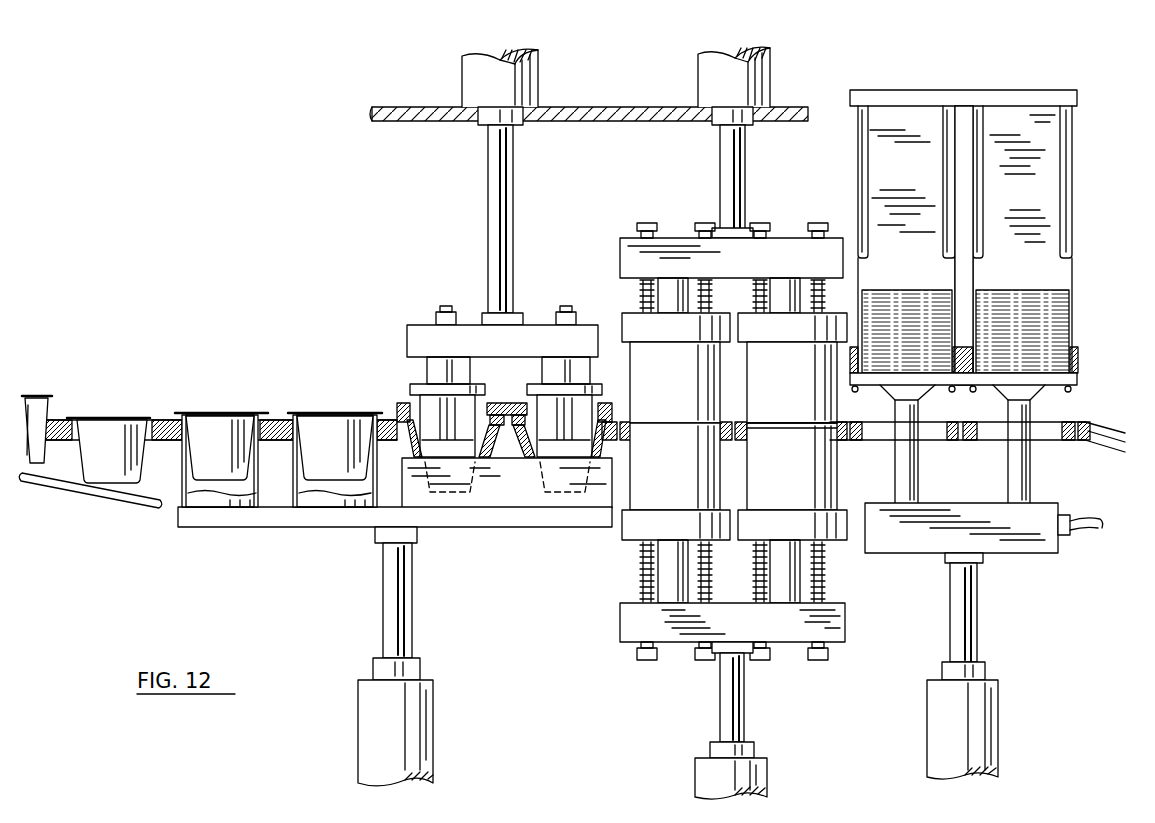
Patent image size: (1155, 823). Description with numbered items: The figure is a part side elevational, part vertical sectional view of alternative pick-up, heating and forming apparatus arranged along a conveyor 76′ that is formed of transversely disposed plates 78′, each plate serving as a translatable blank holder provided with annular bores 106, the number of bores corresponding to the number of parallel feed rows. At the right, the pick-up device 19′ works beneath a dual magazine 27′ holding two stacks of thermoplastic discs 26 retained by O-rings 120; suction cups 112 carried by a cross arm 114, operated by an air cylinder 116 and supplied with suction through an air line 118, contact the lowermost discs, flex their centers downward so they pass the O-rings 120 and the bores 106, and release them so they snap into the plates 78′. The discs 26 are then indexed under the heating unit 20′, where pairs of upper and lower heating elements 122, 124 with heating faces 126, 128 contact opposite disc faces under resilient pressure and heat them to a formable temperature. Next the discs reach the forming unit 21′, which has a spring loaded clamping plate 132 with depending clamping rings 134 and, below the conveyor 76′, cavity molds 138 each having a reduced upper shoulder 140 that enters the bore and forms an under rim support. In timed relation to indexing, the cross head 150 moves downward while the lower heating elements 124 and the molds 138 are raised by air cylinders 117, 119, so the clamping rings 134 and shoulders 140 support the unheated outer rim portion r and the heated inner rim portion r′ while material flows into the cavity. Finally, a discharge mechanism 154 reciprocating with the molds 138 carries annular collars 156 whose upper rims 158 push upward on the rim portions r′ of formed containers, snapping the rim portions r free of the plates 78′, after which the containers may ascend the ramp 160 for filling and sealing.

The cross head 150 is at (633, 122).
The forming unit 21′ is at (531, 291).
The heating unit 20′ is at (752, 218).
The magazine 27′ is at (1066, 190).
The discs 26 is at (897, 297).
The clamping plate 132 is at (404, 380).
The clamping rings 134 is at (399, 412).
The cavity molds 138 is at (500, 456).
The reduced upper shoulder 140 is at (400, 462).
The upper heating elements 122 is at (706, 396).
The lower heating elements 124 is at (706, 489).
The heating face 126 is at (768, 423).
The heating face 128 is at (774, 429).
The retaining O-rings 120 is at (855, 386).
The suction cups 112 is at (912, 382).
The annular bores 106 is at (1049, 419).
The plates 78′ is at (165, 418).
The conveyor 76′ is at (1091, 456).
The cross arm 114 is at (925, 530).
The pick-up device 19′ is at (978, 434).
The air line 118 is at (1086, 530).
The air cylinder 116 is at (985, 722).
The air cylinder 117 is at (757, 755).
The air cylinder 119 is at (420, 733).
The upper rims 158 is at (263, 413).
The outer peripheral portion r is at (190, 415).
The inner portion of the rim r′ is at (212, 414).
The annular collars 156 is at (182, 473).
The ramp 160 is at (70, 490).
The discharge mechanism 154 is at (228, 544).